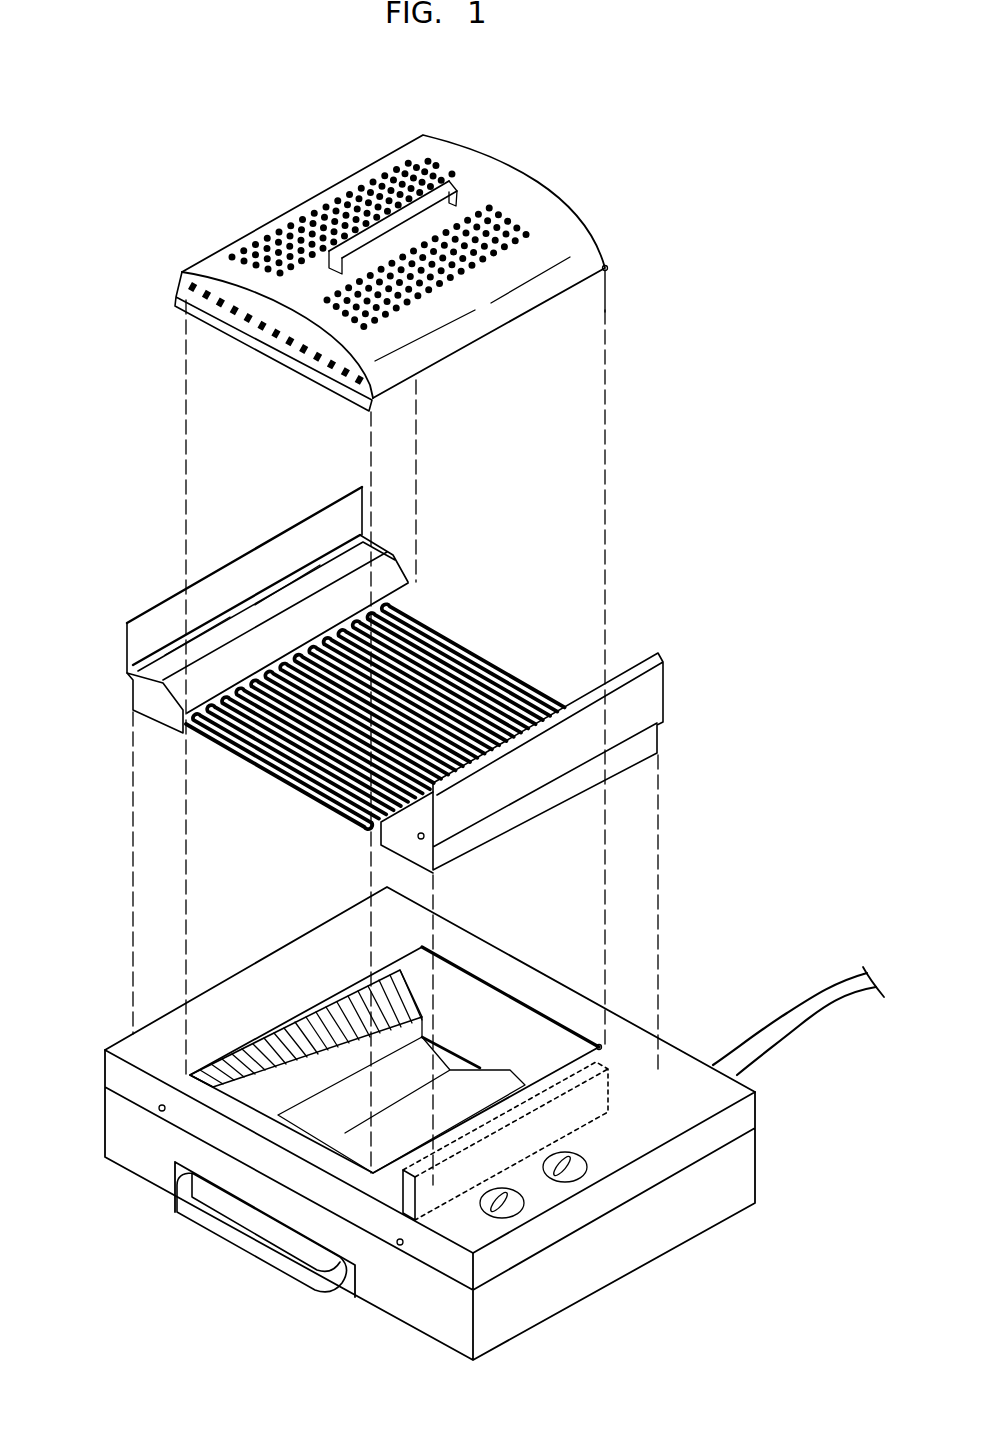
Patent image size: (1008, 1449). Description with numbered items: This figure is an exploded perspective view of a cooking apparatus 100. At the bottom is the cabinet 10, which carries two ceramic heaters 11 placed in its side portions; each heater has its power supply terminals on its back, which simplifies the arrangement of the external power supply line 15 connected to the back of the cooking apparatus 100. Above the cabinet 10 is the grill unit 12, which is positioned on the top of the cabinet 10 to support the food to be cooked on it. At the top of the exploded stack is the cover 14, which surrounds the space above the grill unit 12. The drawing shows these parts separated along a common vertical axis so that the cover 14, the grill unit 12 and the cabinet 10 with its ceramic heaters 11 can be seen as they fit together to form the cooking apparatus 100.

The cooking apparatus 100 is at (861, 425).
The cover 14 is at (558, 187).
The grill unit 12 is at (508, 636).
The cabinet 10 is at (755, 1155).
The ceramic heater 11 is at (260, 1055).
The external power supply line 15 is at (810, 1003).